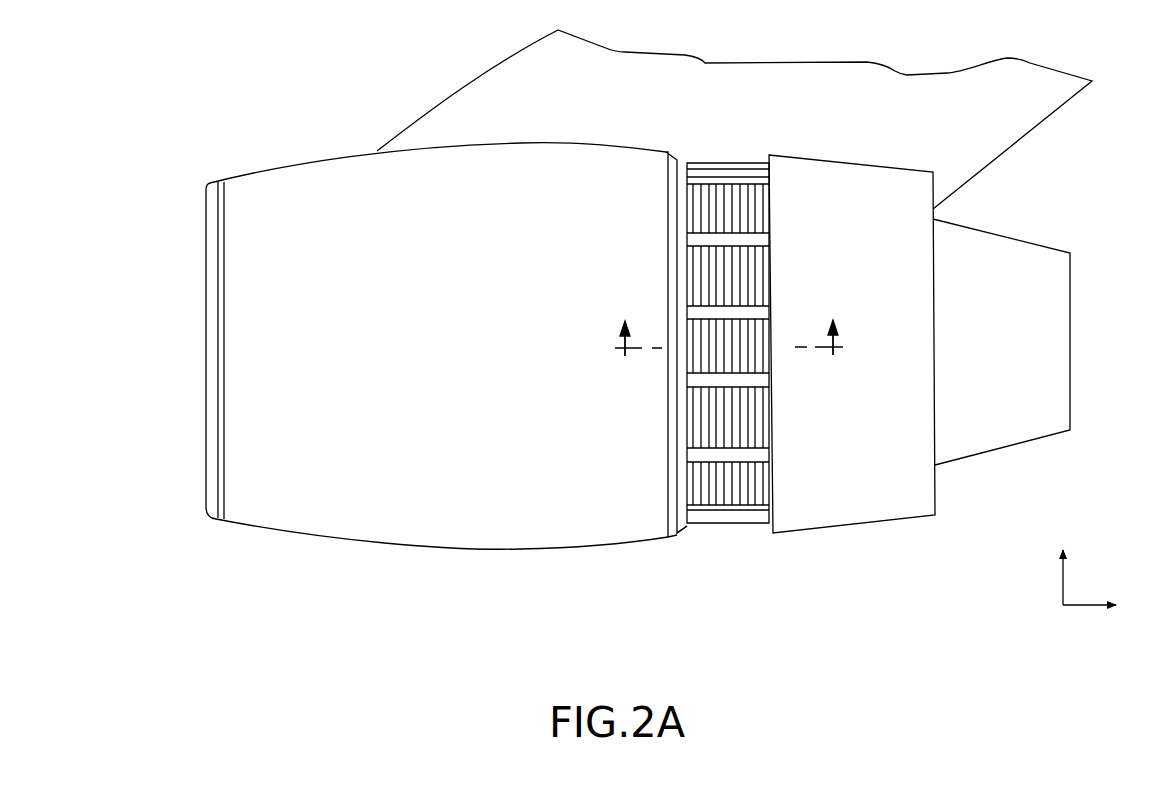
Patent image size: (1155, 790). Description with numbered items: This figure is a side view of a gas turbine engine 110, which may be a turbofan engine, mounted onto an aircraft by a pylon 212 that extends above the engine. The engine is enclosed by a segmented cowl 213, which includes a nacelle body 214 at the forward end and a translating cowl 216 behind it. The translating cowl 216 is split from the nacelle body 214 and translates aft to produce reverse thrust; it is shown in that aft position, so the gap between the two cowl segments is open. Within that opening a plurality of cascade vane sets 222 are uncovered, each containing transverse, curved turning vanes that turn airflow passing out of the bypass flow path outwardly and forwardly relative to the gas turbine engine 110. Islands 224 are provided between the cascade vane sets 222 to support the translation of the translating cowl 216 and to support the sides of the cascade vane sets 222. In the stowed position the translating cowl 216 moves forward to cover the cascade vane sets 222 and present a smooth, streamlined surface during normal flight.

The gas turbine engine 110 is at (329, 106).
The pylon 212 is at (878, 130).
The segmented cowl 213 is at (686, 538).
The nacelle body 214 is at (560, 550).
The translating cowl 216 is at (833, 534).
The cascade vane sets 222 is at (712, 417).
The islands 224 is at (738, 238).